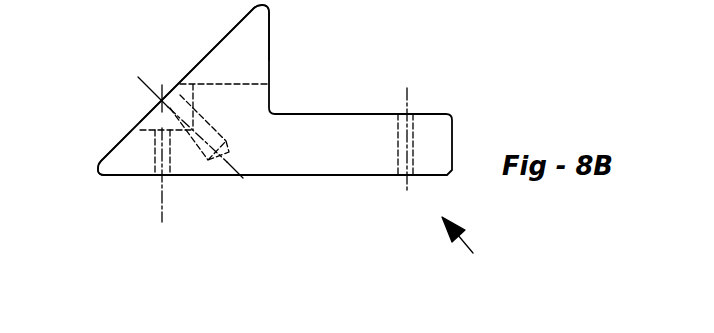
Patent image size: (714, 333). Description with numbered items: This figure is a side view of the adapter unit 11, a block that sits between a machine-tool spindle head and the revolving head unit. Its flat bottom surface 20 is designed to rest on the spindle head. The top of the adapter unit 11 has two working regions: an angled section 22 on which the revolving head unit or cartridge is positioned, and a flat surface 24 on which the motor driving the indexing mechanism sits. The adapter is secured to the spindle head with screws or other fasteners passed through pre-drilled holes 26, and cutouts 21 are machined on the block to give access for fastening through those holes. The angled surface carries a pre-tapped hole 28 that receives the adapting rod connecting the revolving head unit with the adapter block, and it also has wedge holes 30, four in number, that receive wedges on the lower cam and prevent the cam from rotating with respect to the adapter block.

The adapter unit 11 is at (477, 252).
The flat bottom surface 20 is at (335, 175).
The cutouts 21 is at (167, 61).
The angled section 22 is at (112, 148).
The flat surface 24 is at (320, 113).
The pre-drilled holes 26 is at (408, 113).
The pre-tapped hole 28 is at (196, 143).
The wedge holes 30 is at (232, 30).